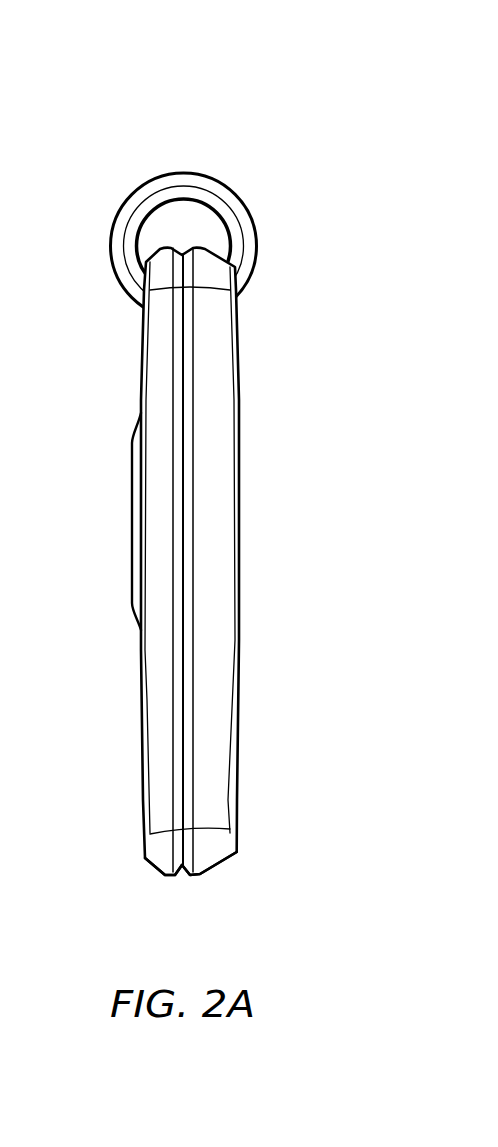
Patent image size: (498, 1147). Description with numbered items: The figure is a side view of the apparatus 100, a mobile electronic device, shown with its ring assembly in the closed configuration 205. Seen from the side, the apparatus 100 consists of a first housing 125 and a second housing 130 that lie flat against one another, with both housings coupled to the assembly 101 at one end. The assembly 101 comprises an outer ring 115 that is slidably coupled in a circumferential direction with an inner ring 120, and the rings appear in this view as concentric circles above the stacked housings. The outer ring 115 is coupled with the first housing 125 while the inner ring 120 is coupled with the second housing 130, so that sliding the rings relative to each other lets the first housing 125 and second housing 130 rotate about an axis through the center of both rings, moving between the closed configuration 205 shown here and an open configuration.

The apparatus 100 is at (150, 80).
The assembly 101 is at (110, 228).
The outer ring 115 is at (157, 175).
The inner ring 120 is at (193, 184).
The closed configuration 205 is at (276, 290).
The first housing 125 is at (163, 884).
The second housing 130 is at (208, 884).